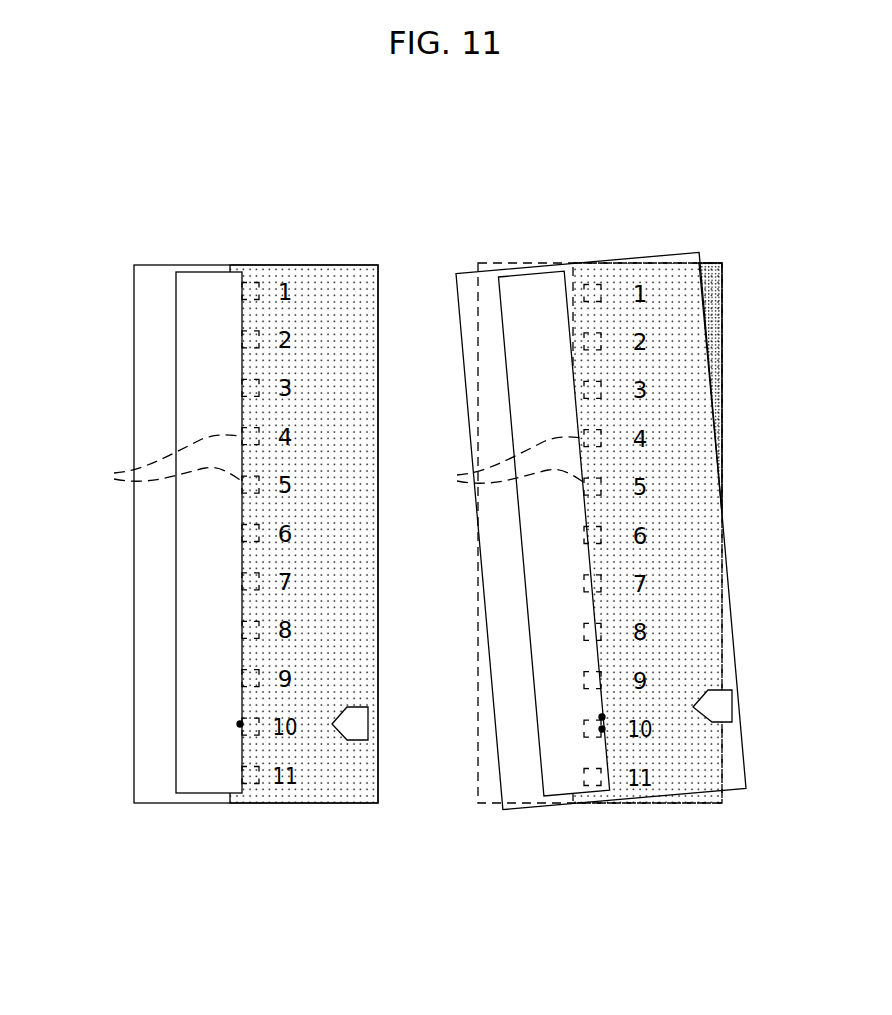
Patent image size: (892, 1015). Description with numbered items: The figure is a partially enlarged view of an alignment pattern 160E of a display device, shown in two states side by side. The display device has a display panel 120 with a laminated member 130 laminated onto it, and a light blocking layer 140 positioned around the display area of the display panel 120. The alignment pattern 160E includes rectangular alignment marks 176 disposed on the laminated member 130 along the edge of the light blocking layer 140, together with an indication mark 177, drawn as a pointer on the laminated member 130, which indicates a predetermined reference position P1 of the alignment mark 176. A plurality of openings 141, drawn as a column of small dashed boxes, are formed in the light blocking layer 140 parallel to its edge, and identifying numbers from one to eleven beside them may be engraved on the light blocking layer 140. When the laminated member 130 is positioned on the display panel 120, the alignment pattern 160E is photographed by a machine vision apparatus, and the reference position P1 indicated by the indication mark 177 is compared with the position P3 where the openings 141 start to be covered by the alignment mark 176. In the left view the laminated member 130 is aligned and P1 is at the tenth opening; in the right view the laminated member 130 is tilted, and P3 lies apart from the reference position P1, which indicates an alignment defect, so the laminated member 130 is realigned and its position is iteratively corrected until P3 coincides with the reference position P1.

The display panel 120 is at (722, 261).
The laminated member 130 is at (739, 652).
The light blocking layer 140 is at (342, 790).
The openings 141 is at (329, 463).
The alignment pattern 160E is at (172, 288).
The alignment mark 176 is at (196, 703).
The indication mark 177 is at (369, 723).
The reference position P1 is at (240, 724).
The position where the openings start to be covered P3 is at (602, 729).